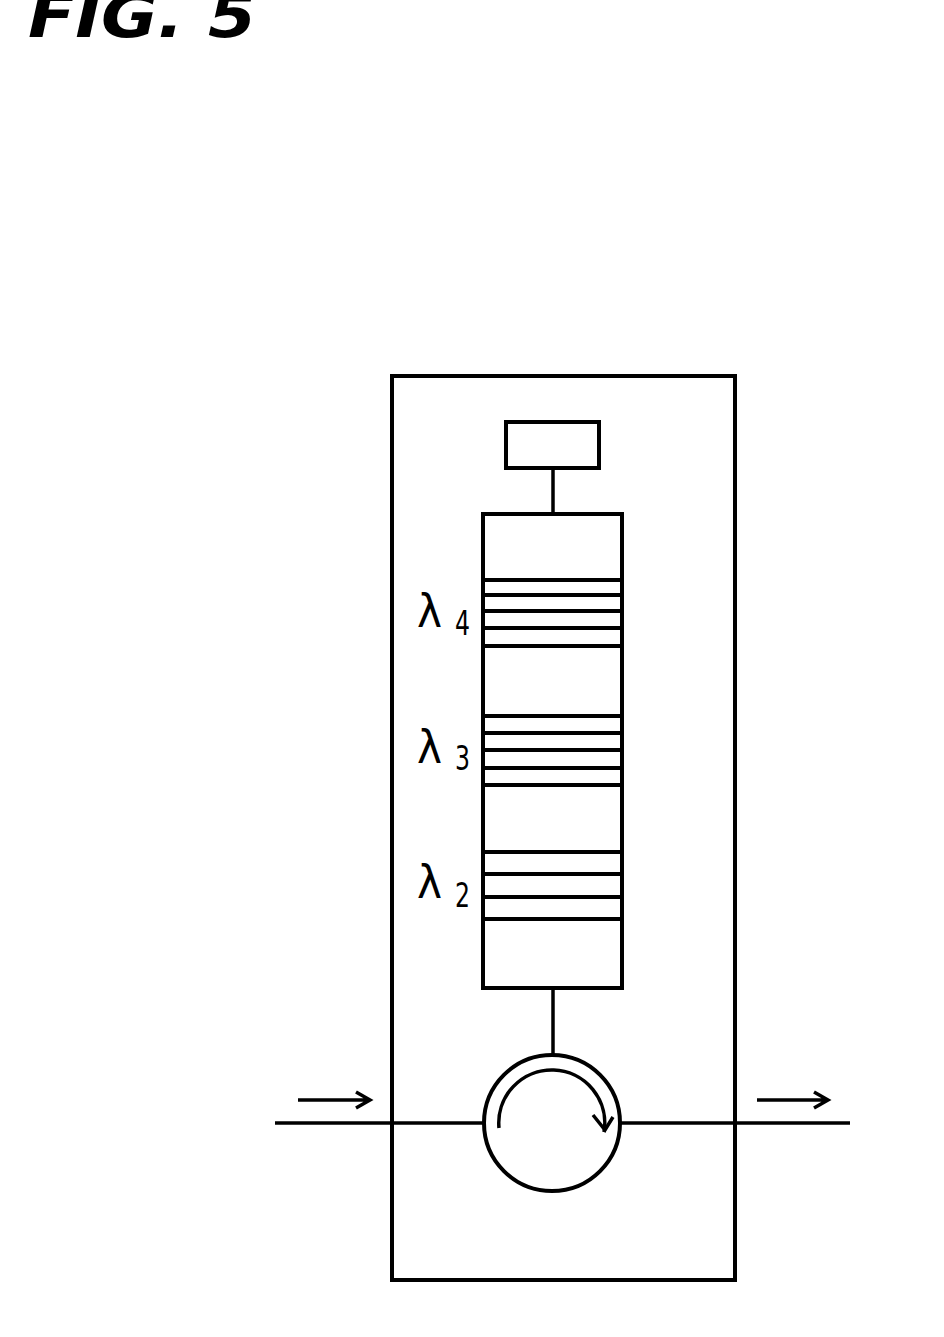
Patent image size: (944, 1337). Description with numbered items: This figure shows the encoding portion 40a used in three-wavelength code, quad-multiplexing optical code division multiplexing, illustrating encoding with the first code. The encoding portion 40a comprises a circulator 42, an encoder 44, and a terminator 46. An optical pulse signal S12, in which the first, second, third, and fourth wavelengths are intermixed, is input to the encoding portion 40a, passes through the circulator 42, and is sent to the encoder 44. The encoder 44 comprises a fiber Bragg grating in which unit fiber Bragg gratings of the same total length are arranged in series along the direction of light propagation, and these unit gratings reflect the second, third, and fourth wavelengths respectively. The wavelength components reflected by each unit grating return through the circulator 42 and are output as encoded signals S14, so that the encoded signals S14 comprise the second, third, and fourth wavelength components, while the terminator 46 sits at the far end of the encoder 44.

The encoding portion 40a is at (736, 560).
The circulator 42 is at (551, 1191).
The encoder 44 is at (622, 695).
The terminator 46 is at (599, 448).
The optical pulse signal S12 is at (322, 1100).
The encoded signal S14 is at (780, 1100).